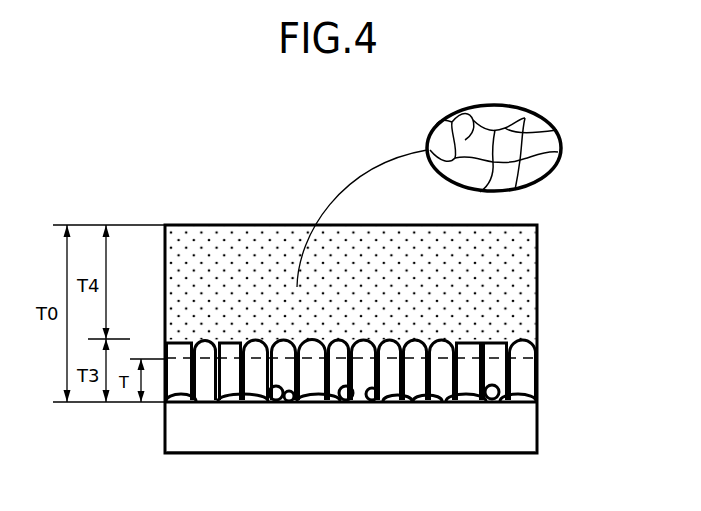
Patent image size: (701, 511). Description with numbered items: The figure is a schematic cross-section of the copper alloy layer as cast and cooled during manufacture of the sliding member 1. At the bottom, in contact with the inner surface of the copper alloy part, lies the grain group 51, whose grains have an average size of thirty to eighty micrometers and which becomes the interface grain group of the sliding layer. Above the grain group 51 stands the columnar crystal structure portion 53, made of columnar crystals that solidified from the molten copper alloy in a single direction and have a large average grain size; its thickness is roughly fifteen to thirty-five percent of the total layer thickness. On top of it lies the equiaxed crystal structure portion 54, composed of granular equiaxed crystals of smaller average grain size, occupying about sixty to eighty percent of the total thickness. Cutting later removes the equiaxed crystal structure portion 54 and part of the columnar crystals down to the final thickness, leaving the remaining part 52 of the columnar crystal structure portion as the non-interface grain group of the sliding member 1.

The sliding member 1 is at (216, 200).
The grain group 51 is at (535, 398).
The remaining part of the columnar crystal structure portion 52 is at (523, 372).
The columnar crystal structure portion 53 is at (523, 345).
The equiaxed crystal structure portion 54 is at (525, 247).